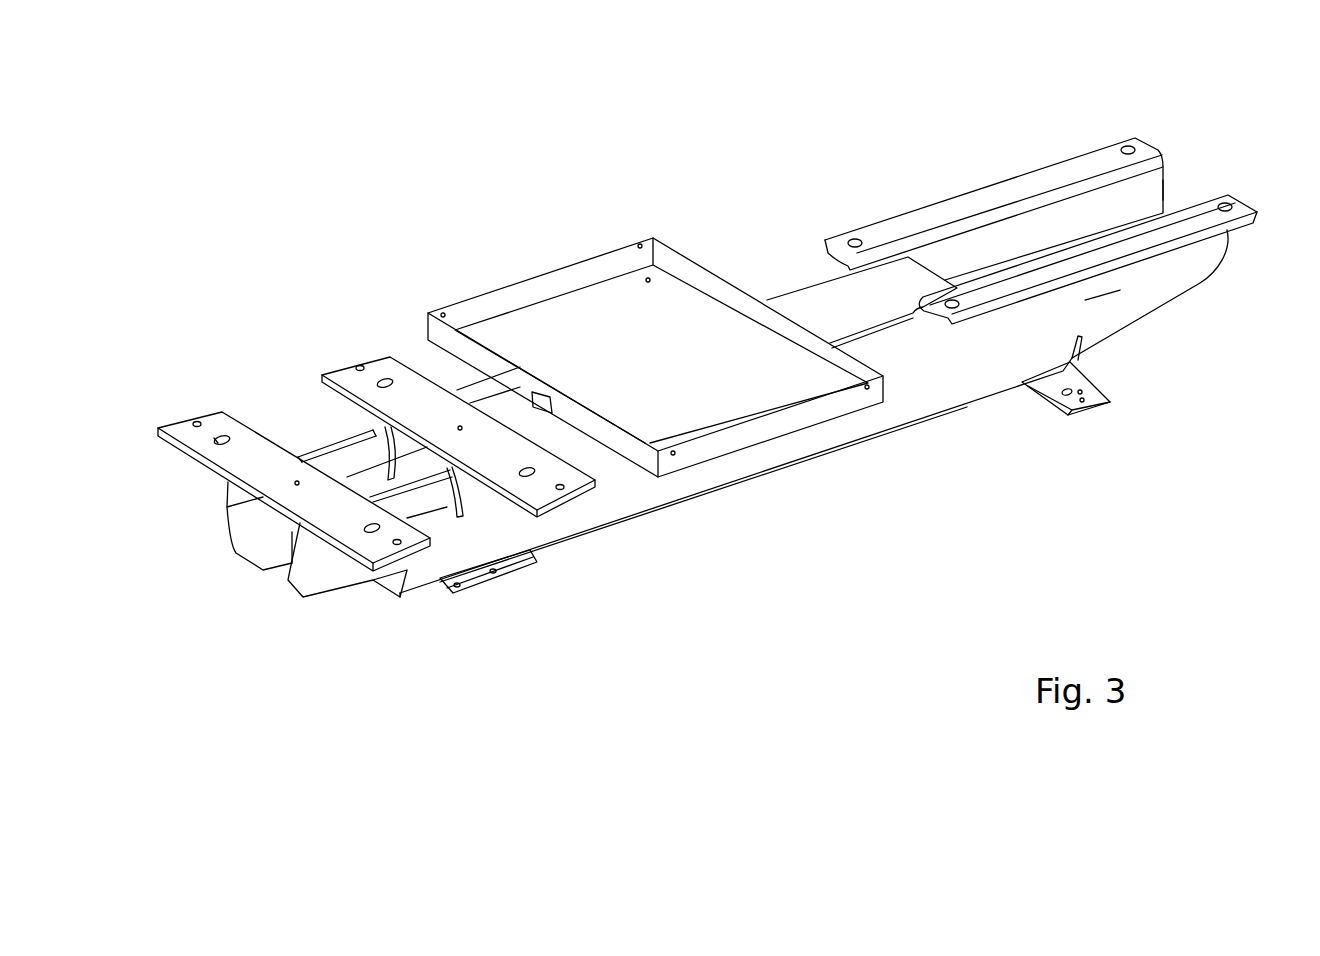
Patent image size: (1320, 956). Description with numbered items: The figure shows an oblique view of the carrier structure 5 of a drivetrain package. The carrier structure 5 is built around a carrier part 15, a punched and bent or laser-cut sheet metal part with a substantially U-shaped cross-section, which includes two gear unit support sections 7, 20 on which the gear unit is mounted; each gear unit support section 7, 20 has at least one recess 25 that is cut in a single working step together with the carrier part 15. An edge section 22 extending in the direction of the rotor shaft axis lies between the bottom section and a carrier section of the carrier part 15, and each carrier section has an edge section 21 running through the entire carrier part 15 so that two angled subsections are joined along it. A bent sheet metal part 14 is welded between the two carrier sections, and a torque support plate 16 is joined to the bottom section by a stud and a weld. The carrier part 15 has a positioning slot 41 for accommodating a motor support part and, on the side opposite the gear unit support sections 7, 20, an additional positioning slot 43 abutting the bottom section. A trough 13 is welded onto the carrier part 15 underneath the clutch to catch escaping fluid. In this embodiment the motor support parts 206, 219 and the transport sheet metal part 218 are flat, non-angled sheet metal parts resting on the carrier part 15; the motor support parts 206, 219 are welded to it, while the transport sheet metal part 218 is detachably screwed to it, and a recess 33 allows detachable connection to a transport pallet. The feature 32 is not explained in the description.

The carrier structure 5 is at (917, 473).
The gear unit support section 7 is at (1135, 257).
The trough 13 is at (593, 315).
The sheet metal part 14 is at (832, 302).
The carrier part 15 is at (1138, 182).
The torque support plate 16 is at (493, 575).
The gear unit support section 20 is at (965, 187).
The edge section 21 is at (1210, 247).
The edge section 22 is at (967, 407).
The recess 25 is at (1126, 142).
The slot 32 is at (215, 440).
The recess 33 is at (190, 415).
The positioning slot 41 is at (382, 445).
The additional positioning slot 43 is at (1080, 361).
The motor support part 206 is at (218, 427).
The transport sheet metal part 218 is at (1082, 396).
The motor support part 219 is at (380, 372).